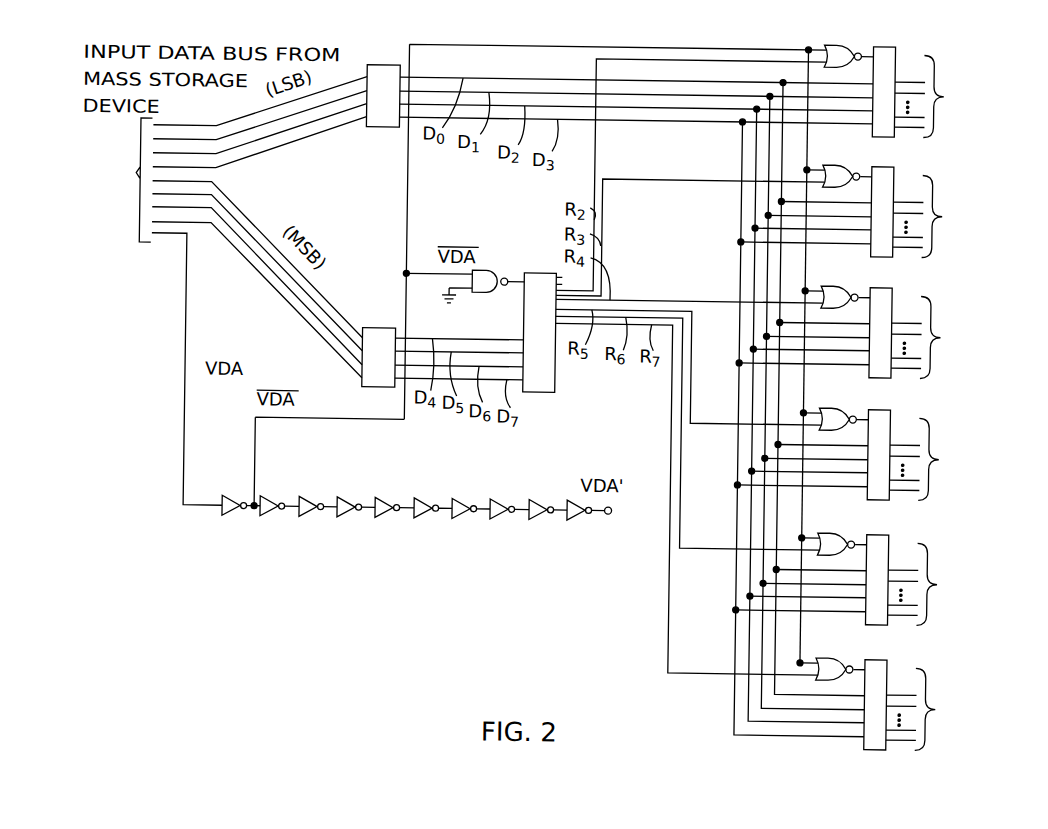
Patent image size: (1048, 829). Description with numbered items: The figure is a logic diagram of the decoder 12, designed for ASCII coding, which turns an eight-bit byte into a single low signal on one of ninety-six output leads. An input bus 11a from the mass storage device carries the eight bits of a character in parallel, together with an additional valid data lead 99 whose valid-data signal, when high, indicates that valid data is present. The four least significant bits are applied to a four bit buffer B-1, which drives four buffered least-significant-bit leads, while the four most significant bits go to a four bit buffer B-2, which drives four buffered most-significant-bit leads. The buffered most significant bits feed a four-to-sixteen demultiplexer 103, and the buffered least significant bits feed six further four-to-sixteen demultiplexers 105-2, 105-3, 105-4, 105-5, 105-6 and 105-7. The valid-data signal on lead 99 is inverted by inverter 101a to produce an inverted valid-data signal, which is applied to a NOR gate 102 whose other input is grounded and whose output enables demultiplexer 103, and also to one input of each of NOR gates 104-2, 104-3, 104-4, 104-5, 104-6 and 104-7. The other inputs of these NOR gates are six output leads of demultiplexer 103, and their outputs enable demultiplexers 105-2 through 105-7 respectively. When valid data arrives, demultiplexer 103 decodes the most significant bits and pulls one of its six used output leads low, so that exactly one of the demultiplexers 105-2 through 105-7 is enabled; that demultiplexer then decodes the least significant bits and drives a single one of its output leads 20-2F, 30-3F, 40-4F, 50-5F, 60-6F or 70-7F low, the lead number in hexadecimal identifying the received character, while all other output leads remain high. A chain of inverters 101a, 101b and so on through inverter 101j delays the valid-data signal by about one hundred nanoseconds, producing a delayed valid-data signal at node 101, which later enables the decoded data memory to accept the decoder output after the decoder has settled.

The input bus 11a is at (131, 187).
The valid data lead 99 is at (186, 348).
The node 101 is at (615, 517).
The inverter 101a is at (232, 518).
The inverter 101b is at (282, 518).
The inverter 101j is at (576, 520).
The decoder 12 is at (443, 550).
The NOR gate 102 is at (478, 271).
The demultiplexer 103 is at (540, 393).
The four bit buffer B-1 is at (380, 130).
The four bit buffer B-2 is at (378, 331).
The NOR gate 104-2 is at (852, 35).
The NOR gate 104-3 is at (852, 155).
The NOR gate 104-4 is at (852, 276).
The NOR gate 104-5 is at (852, 398).
The NOR gate 104-6 is at (852, 523).
The NOR gate 104-7 is at (852, 648).
The demultiplexer 105-2 is at (885, 43).
The demultiplexer 105-3 is at (885, 163).
The demultiplexer 105-4 is at (885, 284).
The demultiplexer 105-5 is at (885, 406).
The demultiplexer 105-6 is at (885, 531).
The demultiplexer 105-7 is at (885, 656).
The output leads 20-2F is at (1002, 98).
The output leads 30-3F is at (1000, 218).
The output leads 40-4F is at (998, 339).
The output leads 50-5F is at (997, 461).
The output leads 60-6F is at (995, 586).
The output leads 70-7F is at (993, 711).